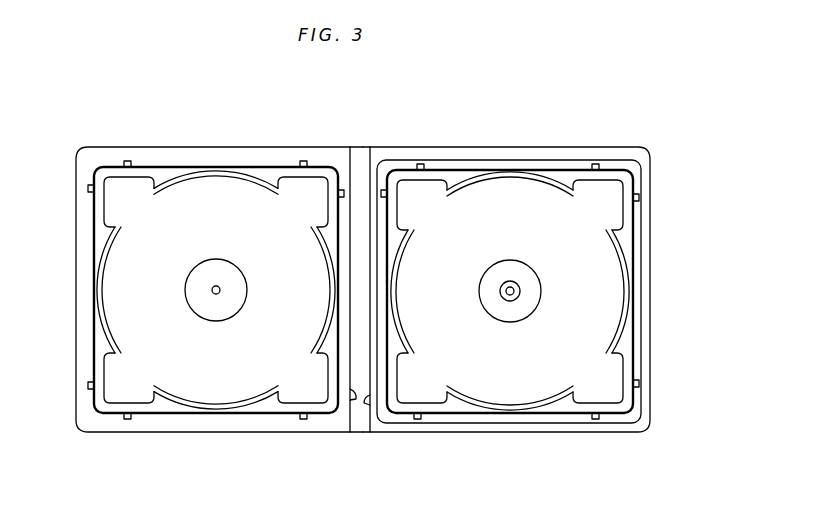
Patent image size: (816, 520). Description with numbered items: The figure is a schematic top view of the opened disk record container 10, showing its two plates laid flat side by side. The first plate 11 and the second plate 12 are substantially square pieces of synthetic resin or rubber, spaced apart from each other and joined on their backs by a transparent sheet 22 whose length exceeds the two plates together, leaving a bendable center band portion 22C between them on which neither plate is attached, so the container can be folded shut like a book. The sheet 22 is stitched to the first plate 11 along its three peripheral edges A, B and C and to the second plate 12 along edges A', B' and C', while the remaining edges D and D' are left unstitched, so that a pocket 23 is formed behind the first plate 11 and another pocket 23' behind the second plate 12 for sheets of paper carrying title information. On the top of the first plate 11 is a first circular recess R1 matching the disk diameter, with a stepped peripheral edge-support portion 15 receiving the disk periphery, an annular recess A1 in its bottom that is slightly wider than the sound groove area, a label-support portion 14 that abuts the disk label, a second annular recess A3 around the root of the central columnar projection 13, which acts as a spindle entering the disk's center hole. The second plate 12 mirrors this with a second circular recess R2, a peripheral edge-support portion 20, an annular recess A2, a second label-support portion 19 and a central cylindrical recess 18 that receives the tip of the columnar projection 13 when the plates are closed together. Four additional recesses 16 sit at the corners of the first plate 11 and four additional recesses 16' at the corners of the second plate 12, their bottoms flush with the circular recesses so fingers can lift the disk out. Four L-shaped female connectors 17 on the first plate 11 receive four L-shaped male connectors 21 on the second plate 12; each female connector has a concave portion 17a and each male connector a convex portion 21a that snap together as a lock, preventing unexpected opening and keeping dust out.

The container 10 is at (668, 170).
The first plate 11 is at (606, 247).
The second plate 12 is at (92, 264).
The columnar projection 13 is at (525, 272).
The label-support portion 14 is at (499, 300).
The peripheral edge-support portion 15 is at (512, 178).
The additional recesses 16 is at (543, 287).
The additional recesses 16' is at (216, 294).
The female connectors 17 is at (402, 168).
The concave portion 17a is at (387, 193).
The cylindrical recess 18 is at (213, 294).
The second label-support portion 19 is at (232, 275).
The peripheral edge-support portion 20 is at (216, 173).
The male connectors 21 is at (104, 172).
The convex portion 21a is at (127, 160).
The transparent sheet 22 is at (365, 146).
The center band portion 22C is at (362, 423).
The pocket 23 is at (382, 430).
The pocket 23' is at (346, 437).
The peripheral edge A is at (515, 128).
The peripheral edge A' is at (205, 124).
The peripheral edge B is at (671, 292).
The peripheral edge B' is at (60, 230).
The peripheral edge C is at (509, 457).
The peripheral edge C' is at (204, 452).
The remaining edge D is at (381, 140).
The remaining edge D' is at (348, 139).
The first circular recess R1 is at (489, 258).
The second circular recess R2 is at (198, 258).
The annular recess A1 is at (562, 350).
The annular recess A2 is at (282, 350).
The second annular recess A3 is at (532, 293).